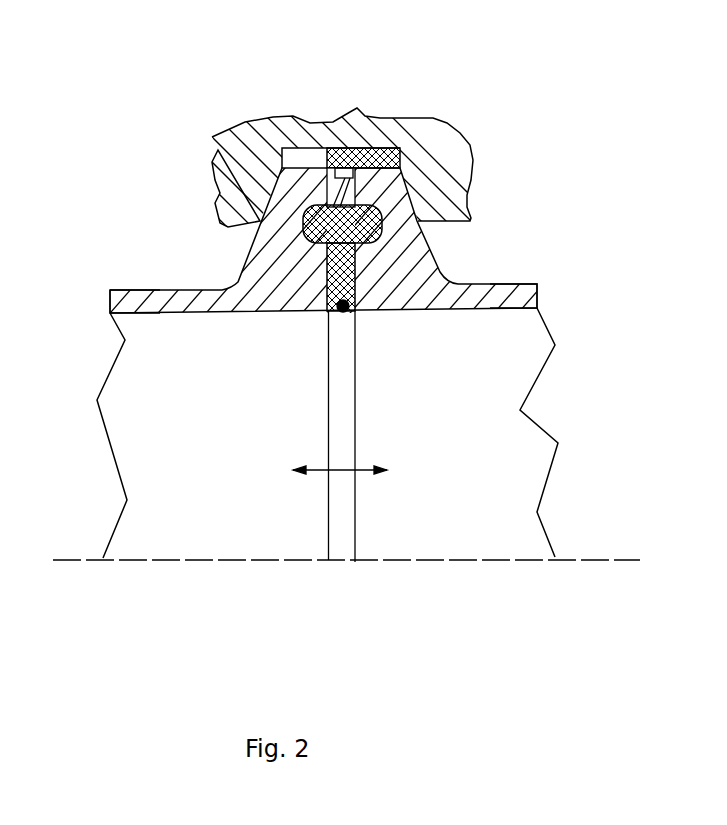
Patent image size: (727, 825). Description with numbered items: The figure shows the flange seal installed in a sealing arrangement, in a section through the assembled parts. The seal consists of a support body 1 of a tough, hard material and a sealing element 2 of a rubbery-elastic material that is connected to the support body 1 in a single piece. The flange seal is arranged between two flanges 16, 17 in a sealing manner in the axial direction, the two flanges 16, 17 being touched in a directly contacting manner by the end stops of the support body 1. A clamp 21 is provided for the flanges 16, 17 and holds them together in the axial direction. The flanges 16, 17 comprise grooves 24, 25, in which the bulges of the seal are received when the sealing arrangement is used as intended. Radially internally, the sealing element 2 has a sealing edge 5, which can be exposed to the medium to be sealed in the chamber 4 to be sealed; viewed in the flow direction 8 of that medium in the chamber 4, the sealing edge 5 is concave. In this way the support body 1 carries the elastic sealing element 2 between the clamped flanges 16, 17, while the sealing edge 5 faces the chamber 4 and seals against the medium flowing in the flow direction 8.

The support body 1 is at (365, 172).
The sealing element 2 is at (372, 270).
The chamber to be sealed 4 is at (404, 391).
The sealing edge 5 is at (338, 306).
The flow direction 8 is at (340, 453).
The flange 16 is at (147, 291).
The flange 17 is at (518, 285).
The clamp 21 is at (260, 127).
The groove 24 is at (308, 218).
The groove 25 is at (375, 215).